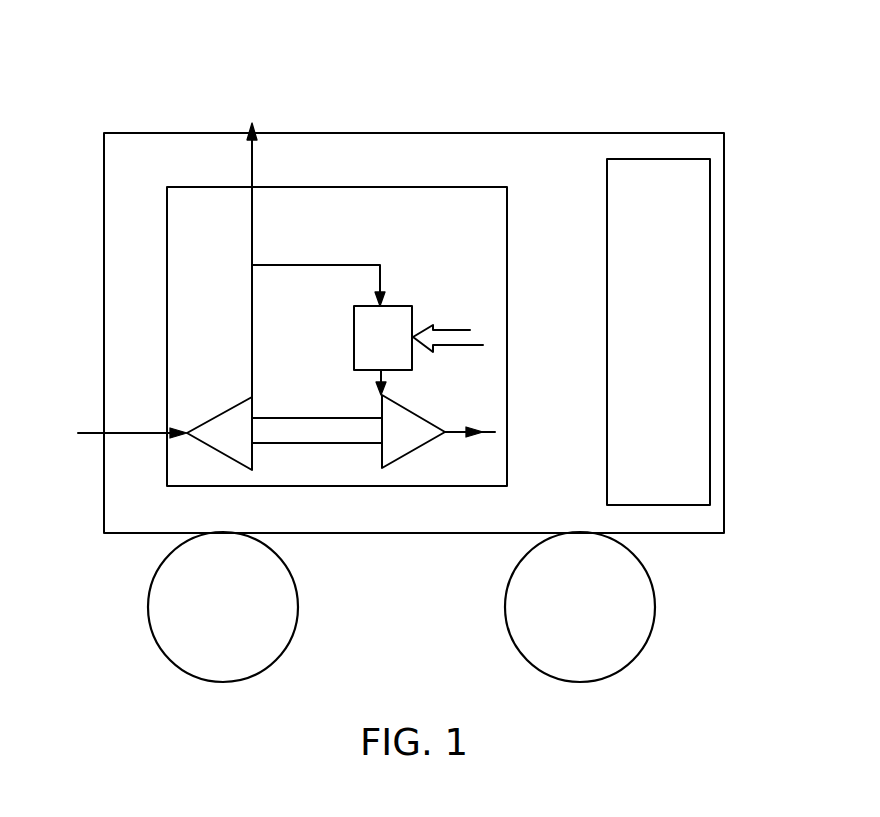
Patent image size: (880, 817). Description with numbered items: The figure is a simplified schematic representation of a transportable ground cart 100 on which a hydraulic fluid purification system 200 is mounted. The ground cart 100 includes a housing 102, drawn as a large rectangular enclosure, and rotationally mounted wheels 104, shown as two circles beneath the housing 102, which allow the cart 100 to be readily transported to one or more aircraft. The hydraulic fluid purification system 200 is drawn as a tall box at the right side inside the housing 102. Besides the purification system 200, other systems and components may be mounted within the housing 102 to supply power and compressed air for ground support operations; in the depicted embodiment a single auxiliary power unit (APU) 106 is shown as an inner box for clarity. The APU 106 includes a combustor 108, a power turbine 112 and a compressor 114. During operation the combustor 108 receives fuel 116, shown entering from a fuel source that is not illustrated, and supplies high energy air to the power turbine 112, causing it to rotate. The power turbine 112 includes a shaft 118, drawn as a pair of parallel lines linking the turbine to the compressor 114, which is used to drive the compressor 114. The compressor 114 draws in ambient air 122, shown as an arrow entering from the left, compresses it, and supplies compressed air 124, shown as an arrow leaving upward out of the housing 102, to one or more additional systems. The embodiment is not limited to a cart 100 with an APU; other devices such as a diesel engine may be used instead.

The ground cart 100 is at (526, 84).
The housing 102 is at (150, 133).
The wheels 104 is at (300, 603).
The auxiliary power unit (APU) 106 is at (508, 228).
The combustor 108 is at (395, 306).
The power turbine 112 is at (417, 417).
The compressor 114 is at (203, 418).
The fuel 116 is at (463, 340).
The shaft 118 is at (343, 428).
The ambient air 122 is at (122, 420).
The compressed air 124 is at (256, 150).
The hydraulic fluid purification system 200 is at (688, 200).